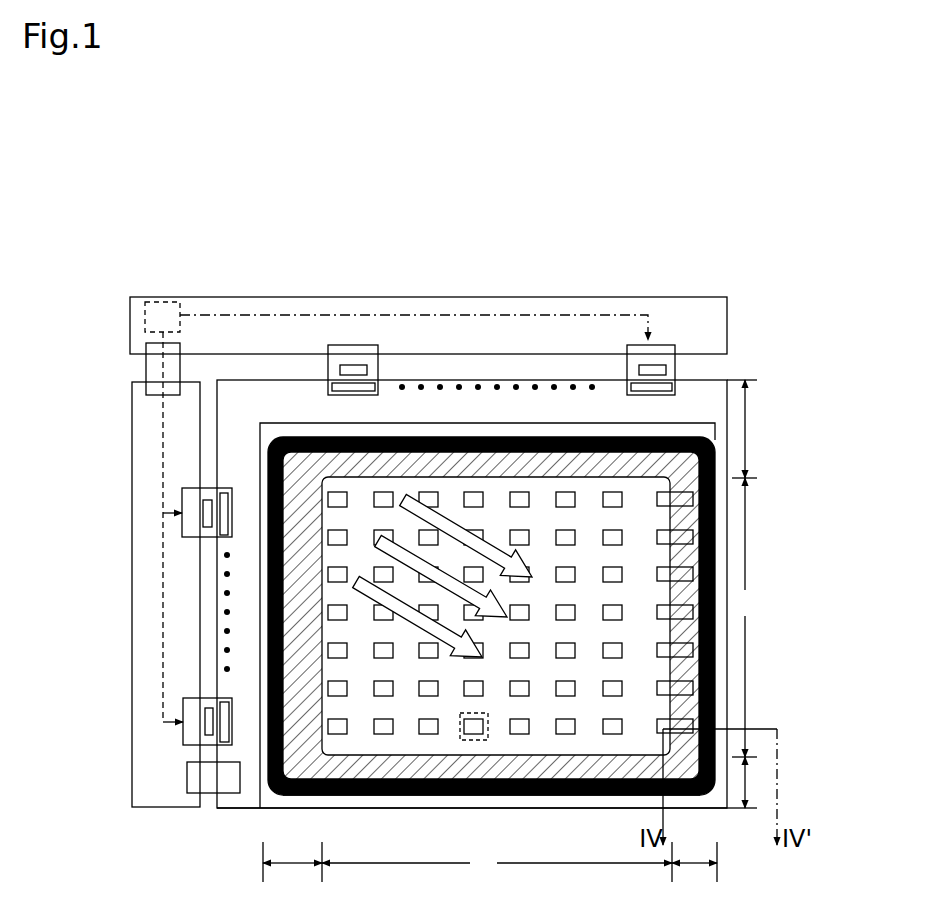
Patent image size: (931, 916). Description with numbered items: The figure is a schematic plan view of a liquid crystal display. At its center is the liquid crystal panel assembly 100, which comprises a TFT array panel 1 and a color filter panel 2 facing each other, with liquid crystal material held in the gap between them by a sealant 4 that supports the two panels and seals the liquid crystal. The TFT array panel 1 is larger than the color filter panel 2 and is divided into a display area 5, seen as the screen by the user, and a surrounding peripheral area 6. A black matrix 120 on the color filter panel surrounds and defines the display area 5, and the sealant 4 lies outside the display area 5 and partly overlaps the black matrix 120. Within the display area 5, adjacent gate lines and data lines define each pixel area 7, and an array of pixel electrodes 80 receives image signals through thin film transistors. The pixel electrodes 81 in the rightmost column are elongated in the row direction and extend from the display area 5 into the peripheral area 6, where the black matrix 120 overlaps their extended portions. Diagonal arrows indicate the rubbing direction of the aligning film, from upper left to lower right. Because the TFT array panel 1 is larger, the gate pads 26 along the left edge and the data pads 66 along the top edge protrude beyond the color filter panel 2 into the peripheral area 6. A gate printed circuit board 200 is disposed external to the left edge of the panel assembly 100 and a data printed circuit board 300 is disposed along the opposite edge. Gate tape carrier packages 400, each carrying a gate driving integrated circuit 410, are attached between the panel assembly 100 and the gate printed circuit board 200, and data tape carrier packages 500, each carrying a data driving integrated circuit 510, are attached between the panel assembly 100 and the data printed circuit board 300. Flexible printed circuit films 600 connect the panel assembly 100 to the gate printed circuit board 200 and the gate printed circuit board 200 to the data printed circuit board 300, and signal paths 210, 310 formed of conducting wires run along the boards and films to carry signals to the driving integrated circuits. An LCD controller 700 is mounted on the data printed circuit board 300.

The TFT array panel 1 is at (718, 377).
The color filter panel 2 is at (710, 422).
The sealant 4 is at (716, 528).
The display area 5 is at (544, 687).
The peripheral area 6 is at (514, 638).
The pixel area 7 is at (480, 741).
The gate pads 26 is at (222, 528).
The data pads 66 is at (362, 385).
The pixel electrodes 80 is at (388, 491).
The pixel electrodes 81 is at (688, 497).
The liquid crystal panel assembly 100 is at (393, 808).
The black matrix 120 is at (600, 796).
The gate printed circuit board 200 is at (132, 688).
The signal path 210 is at (163, 430).
The data printed circuit board 300 is at (517, 297).
The signal path 310 is at (232, 313).
The gate tape carrier packages 400 is at (182, 496).
The gate driving integrated circuits 410 is at (205, 513).
The data tape carrier packages 500 is at (330, 343).
The data driving integrated circuits 510 is at (347, 366).
The flexible printed circuit films 600 is at (150, 368).
The LCD controller 700 is at (163, 297).